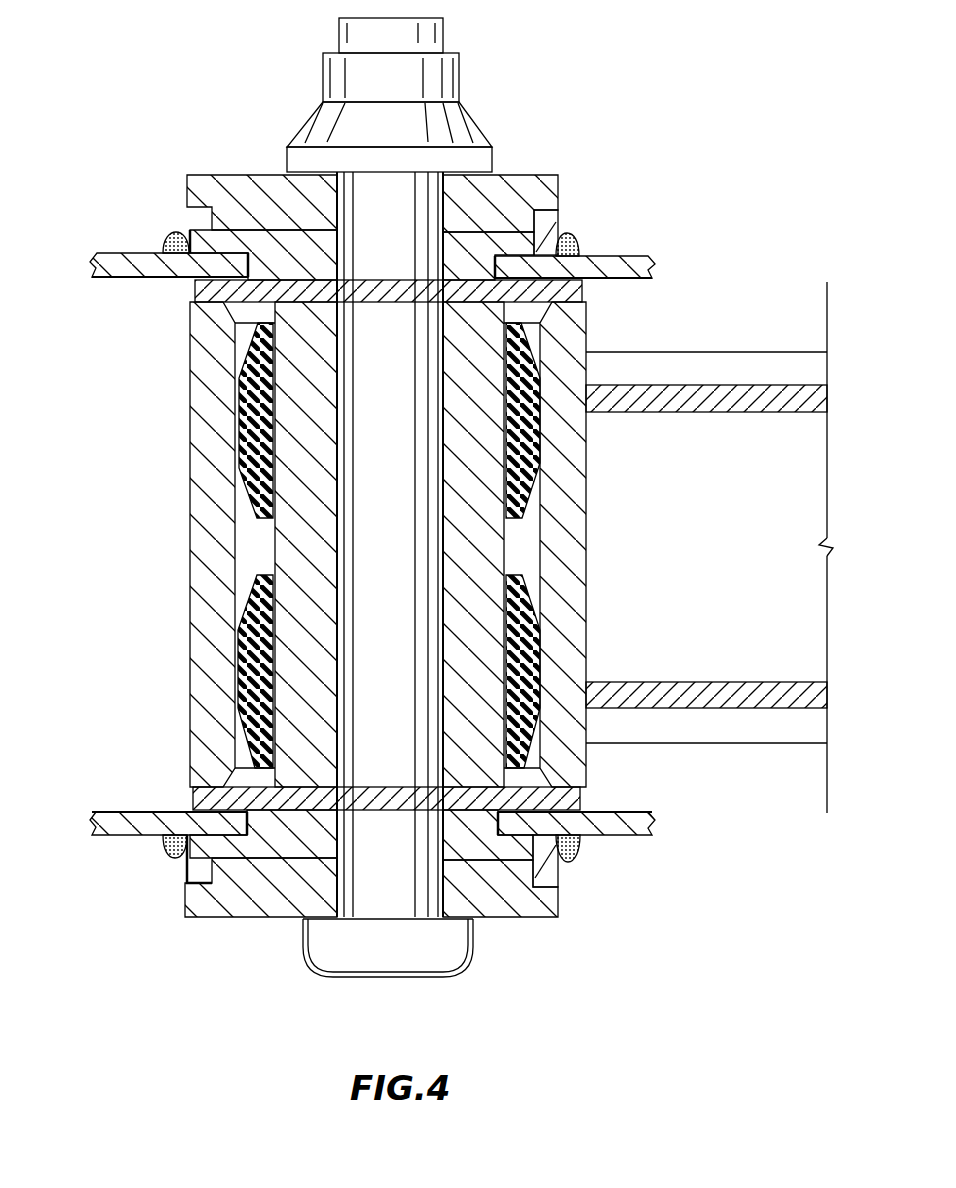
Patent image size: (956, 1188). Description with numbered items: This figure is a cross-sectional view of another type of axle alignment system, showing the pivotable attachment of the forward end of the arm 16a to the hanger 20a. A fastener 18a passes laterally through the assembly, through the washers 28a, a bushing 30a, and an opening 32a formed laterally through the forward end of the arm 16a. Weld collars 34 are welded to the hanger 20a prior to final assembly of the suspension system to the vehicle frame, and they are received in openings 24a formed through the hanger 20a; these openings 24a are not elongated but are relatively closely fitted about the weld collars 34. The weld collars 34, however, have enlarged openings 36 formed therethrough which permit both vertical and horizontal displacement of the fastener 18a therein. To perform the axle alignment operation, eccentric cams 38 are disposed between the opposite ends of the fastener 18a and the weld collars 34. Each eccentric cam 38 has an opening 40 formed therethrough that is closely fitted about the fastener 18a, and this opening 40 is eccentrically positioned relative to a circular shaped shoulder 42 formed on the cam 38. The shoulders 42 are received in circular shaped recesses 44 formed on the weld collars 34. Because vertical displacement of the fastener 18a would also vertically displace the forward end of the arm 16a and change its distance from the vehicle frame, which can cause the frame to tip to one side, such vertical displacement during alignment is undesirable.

The arm 16a is at (763, 350).
The fastener 18a is at (462, 967).
The hanger 20a is at (123, 835).
The openings 24a is at (253, 264).
The washers 28a is at (587, 293).
The bushing 30a is at (273, 543).
The opening 32a is at (538, 545).
The weld collars 34 is at (557, 221).
The enlarged openings 36 is at (305, 266).
The eccentric cams 38 is at (540, 173).
The openings 40 is at (442, 207).
The shoulders 42 is at (212, 218).
The recesses 44 is at (515, 230).